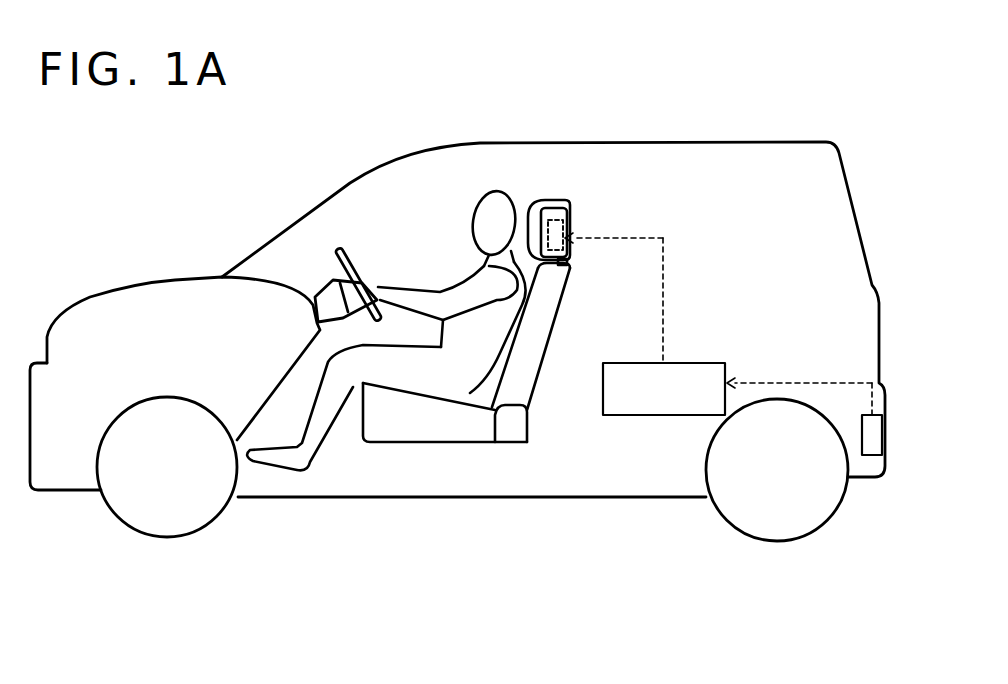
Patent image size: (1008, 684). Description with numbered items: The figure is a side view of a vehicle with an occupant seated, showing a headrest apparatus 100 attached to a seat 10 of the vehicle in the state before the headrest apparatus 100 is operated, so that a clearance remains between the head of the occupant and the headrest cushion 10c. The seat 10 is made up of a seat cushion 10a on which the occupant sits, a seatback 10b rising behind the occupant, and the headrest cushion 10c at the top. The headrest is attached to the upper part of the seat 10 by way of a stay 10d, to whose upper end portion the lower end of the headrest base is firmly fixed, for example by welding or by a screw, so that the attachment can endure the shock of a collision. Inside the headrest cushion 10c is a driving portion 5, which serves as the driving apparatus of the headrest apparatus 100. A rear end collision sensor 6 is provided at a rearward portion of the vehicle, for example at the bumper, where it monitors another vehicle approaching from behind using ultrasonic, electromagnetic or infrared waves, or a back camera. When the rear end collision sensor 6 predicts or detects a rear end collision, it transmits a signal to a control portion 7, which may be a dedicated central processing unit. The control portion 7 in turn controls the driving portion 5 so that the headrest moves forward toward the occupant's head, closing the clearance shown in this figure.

The seat 10 is at (513, 362).
The seat cushion 10a is at (423, 437).
The seatback 10b is at (540, 373).
The headrest cushion 10c is at (580, 208).
The stay 10d is at (568, 262).
The driving portion 5 is at (605, 212).
The headrest apparatus 100 is at (560, 209).
The control portion 7 is at (707, 363).
The rear end collision sensor 6 is at (867, 455).